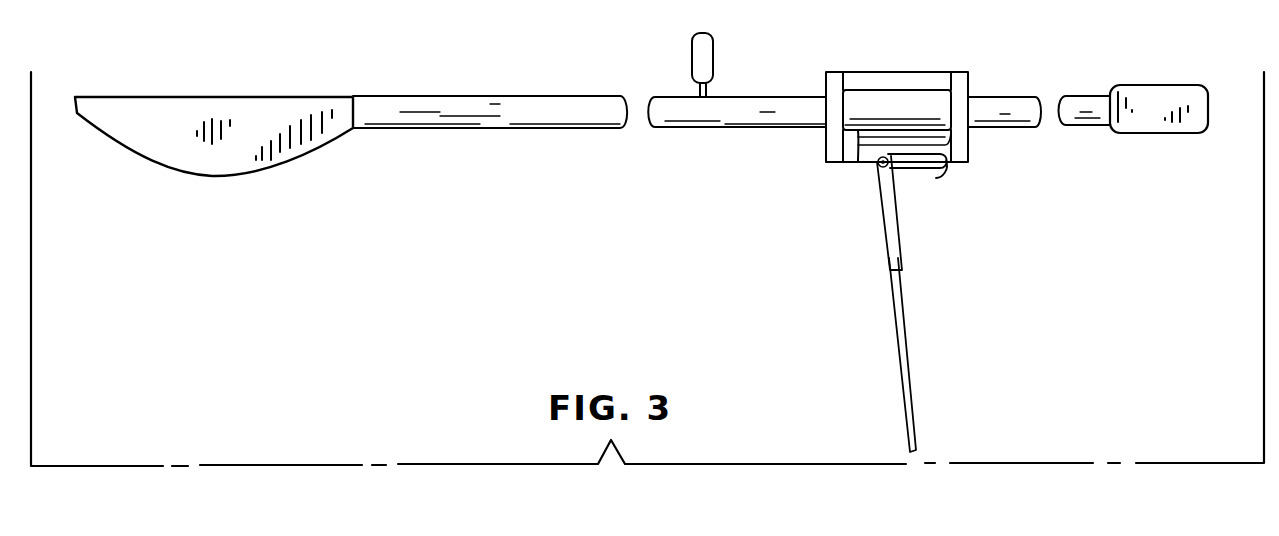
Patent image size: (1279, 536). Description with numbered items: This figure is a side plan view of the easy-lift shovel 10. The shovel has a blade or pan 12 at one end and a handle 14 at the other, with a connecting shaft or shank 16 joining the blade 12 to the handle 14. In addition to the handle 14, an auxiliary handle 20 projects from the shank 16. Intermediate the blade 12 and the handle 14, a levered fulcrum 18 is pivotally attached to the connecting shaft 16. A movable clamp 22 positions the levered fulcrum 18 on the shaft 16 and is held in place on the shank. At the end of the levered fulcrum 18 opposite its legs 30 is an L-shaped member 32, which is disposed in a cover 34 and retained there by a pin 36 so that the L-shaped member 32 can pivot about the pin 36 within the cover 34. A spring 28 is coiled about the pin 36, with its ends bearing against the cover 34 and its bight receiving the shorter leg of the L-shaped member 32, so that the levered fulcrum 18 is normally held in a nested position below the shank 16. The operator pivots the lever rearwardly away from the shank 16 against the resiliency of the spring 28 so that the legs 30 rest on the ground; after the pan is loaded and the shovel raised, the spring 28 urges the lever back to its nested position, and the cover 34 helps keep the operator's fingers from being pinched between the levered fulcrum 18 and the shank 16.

The easy-lift shovel 10 is at (351, 187).
The blade or pan 12 is at (238, 177).
The handle 14 is at (1211, 112).
The connecting shaft (shank) 16 is at (553, 128).
The levered fulcrum 18 is at (816, 239).
The auxiliary handle 20 is at (690, 55).
The movable clamp 22 is at (895, 141).
The spring 28 is at (938, 166).
The legs 30 is at (908, 335).
The L-shaped member 32 is at (897, 215).
The cover 34 is at (824, 145).
The pin 36 is at (870, 193).